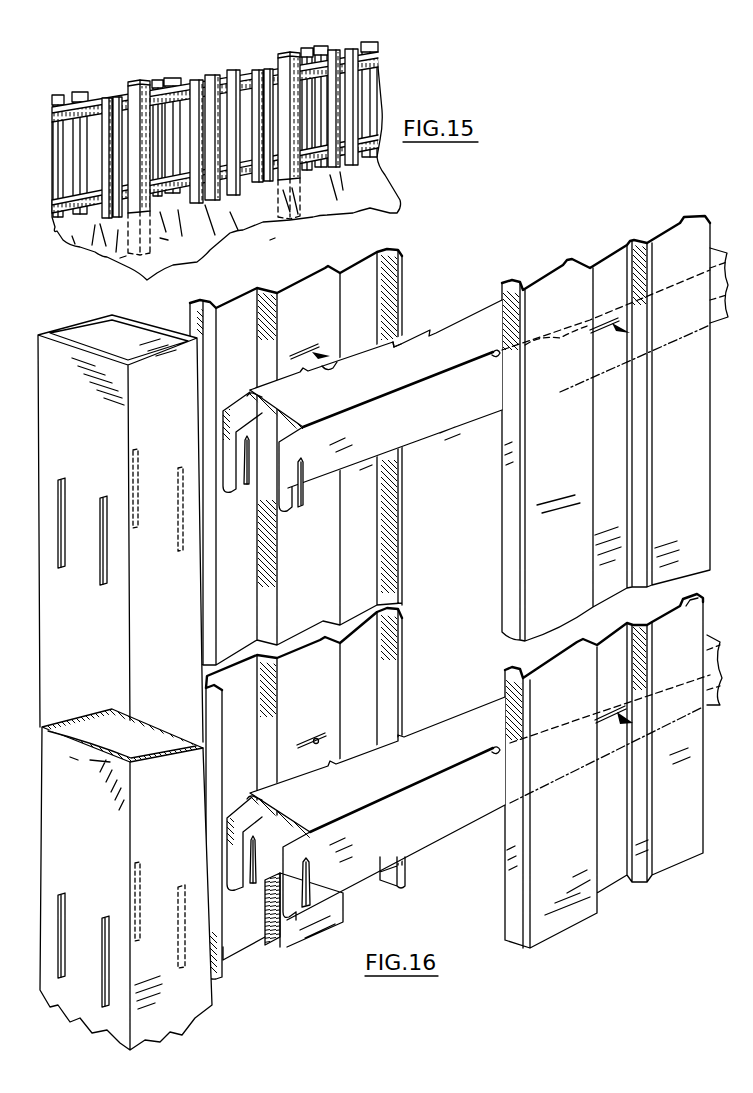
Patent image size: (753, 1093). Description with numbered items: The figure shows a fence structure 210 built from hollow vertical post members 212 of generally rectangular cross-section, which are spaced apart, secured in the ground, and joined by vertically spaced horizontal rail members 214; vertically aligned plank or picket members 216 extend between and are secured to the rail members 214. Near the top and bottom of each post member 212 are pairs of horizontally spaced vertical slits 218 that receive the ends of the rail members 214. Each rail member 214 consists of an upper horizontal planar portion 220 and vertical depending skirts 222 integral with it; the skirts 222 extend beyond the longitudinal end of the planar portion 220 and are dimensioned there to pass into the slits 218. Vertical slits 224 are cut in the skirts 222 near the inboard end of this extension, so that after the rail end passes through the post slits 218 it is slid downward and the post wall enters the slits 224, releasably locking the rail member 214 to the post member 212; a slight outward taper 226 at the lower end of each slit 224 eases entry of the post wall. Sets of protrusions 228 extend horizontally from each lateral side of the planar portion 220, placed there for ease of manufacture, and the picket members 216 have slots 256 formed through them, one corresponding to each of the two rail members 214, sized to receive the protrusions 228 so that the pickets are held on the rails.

In FIG. 15, the fence structure 210 is at (240, 144).
In FIG. 15, the vertical post member 212 is at (142, 82).
In FIG. 16, the vertical post member 212 is at (76, 323).
In FIG. 15, the horizontal rail member 214 is at (177, 90).
In FIG. 16, the horizontal rail member 214 is at (475, 604).
In FIG. 15, the fence plank or picket member 216 is at (206, 145).
In FIG. 16, the fence plank or picket member 216 is at (652, 249).
In FIG. 16, the vertical slit 218 is at (65, 500).
In FIG. 16, the upper horizontal planar portion 220 is at (432, 722).
In FIG. 16, the vertical depending skirt 222 is at (425, 435).
In FIG. 16, the vertical slit in skirt 224 is at (250, 452).
In FIG. 16, the outward taper 226 is at (246, 477).
In FIG. 16, the set of protrusions 228 is at (350, 358).
In FIG. 16, the slot 256 is at (298, 342).